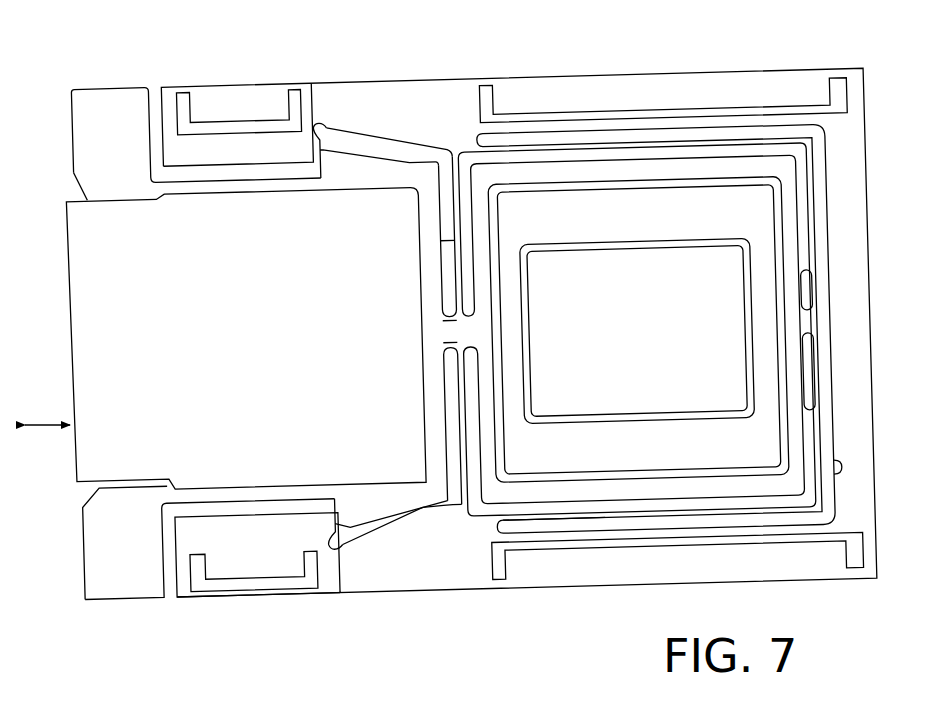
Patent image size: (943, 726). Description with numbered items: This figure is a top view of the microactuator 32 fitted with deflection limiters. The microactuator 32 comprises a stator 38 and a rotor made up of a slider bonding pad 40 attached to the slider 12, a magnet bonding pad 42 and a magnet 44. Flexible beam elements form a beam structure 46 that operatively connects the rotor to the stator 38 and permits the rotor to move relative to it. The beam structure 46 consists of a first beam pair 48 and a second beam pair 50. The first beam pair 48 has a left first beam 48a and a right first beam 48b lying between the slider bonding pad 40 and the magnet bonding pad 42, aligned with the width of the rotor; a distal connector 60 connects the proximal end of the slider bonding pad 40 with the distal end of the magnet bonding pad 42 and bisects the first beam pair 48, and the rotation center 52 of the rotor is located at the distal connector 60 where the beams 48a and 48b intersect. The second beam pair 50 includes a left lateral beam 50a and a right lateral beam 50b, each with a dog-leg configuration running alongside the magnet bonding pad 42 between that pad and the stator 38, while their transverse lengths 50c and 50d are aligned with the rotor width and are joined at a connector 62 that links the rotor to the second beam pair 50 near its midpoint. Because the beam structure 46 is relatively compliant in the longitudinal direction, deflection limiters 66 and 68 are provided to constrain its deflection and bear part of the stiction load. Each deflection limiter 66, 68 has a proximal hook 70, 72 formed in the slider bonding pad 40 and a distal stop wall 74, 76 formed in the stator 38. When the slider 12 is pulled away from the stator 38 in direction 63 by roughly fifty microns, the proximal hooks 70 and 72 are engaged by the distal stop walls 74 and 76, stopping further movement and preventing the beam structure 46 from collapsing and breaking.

The slider 12 is at (82, 229).
The microactuator 32 is at (447, 79).
The stator 38 is at (393, 573).
The slider bonding pad 40 is at (172, 188).
The magnet bonding pad 42 is at (676, 168).
The magnet 44 is at (580, 282).
The beam structure 46 is at (534, 522).
The first beam pair 48 is at (455, 249).
The left first beam 48a is at (454, 214).
The right first beam 48b is at (458, 406).
The second beam pair 50 is at (822, 412).
The left lateral beam 50a is at (585, 145).
The right lateral beam 50b is at (606, 520).
The transverse length of left lateral beam 50c is at (812, 152).
The transverse length of right lateral beam 50d is at (827, 463).
The rotation center 52 is at (447, 325).
The distal connector 60 is at (446, 336).
The connector 62 is at (806, 320).
The direction 63 is at (47, 420).
The deflection limiter 66 is at (322, 128).
The deflection limiter 68 is at (335, 540).
The proximal hook 70 is at (345, 160).
The proximal hook 72 is at (340, 508).
The distal stop wall 74 is at (322, 138).
The distal stop wall 76 is at (320, 524).